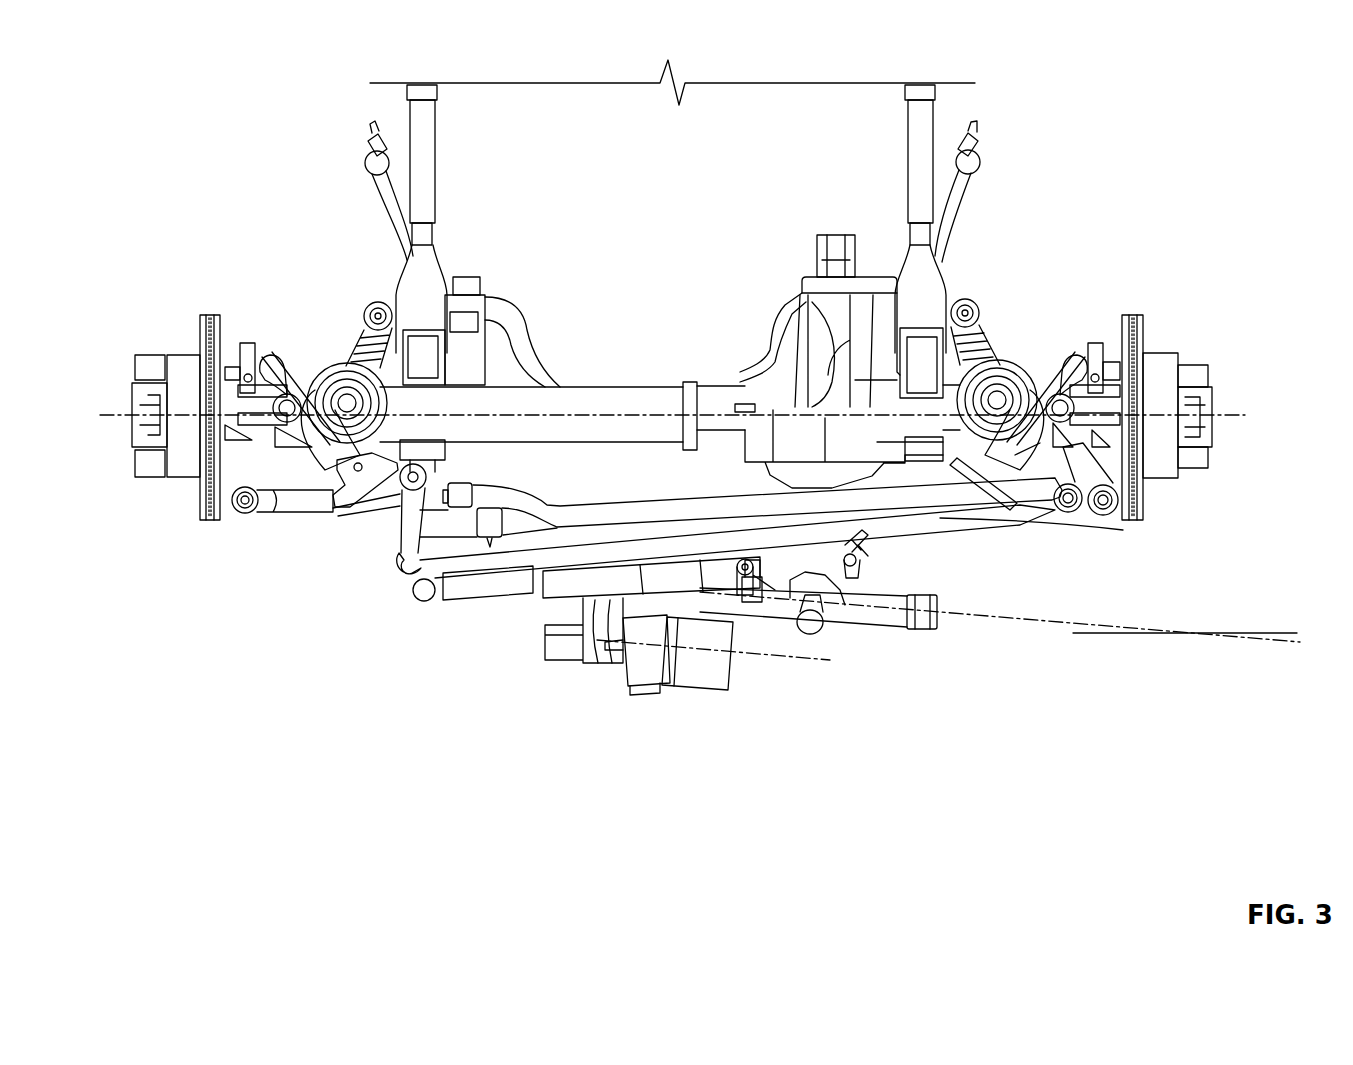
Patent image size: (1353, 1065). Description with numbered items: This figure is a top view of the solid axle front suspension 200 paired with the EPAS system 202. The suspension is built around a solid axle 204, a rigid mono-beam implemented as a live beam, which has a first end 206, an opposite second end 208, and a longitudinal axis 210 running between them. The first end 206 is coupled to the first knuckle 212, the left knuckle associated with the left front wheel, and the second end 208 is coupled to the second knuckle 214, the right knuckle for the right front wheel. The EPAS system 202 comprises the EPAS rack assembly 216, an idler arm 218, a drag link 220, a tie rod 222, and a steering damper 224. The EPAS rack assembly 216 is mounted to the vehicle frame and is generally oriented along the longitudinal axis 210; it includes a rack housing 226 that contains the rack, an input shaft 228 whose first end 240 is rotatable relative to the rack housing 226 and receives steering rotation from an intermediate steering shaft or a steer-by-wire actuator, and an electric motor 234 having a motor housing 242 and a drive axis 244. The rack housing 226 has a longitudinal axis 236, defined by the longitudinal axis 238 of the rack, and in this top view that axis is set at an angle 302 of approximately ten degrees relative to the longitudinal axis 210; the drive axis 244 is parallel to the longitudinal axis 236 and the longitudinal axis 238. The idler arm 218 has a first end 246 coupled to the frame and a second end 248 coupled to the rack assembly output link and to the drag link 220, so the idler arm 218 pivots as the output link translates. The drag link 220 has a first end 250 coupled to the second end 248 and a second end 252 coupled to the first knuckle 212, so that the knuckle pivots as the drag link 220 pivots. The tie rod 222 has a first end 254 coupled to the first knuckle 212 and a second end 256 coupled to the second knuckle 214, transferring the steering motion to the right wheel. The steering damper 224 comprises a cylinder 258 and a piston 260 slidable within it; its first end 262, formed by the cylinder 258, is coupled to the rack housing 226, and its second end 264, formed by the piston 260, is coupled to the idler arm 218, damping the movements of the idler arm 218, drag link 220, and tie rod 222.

The solid axle front suspension 200 is at (1126, 118).
The EPAS system 202 is at (934, 692).
The solid axle 204 is at (557, 403).
The first end 206 is at (1045, 385).
The second end 208 is at (298, 392).
The longitudinal axis 210 is at (1233, 405).
The first knuckle 212 is at (1072, 357).
The second knuckle 214 is at (268, 362).
The EPAS rack assembly 216 is at (930, 645).
The idler arm 218 is at (347, 492).
The drag link 220 is at (960, 508).
The tie rod 222 is at (278, 527).
The steering damper 224 is at (537, 582).
The rack housing 226 is at (883, 627).
The input shaft 228 is at (862, 565).
The electric motor 234 is at (720, 660).
The longitudinal axis 236 is at (1123, 633).
The longitudinal axis 238 is at (1088, 622).
The first end 240 is at (865, 555).
The motor housing 242 is at (690, 670).
The drive axis 244 is at (793, 657).
The first end 246 is at (302, 498).
The second end 248 is at (397, 537).
The first end 250 is at (410, 592).
The second end 252 is at (1043, 512).
The first end 254 is at (1082, 513).
The second end 256 is at (270, 500).
The cylinder 258 is at (610, 577).
The piston 260 is at (493, 585).
The first end 262 is at (715, 577).
The second end 264 is at (448, 590).
The angle 302 is at (1263, 637).